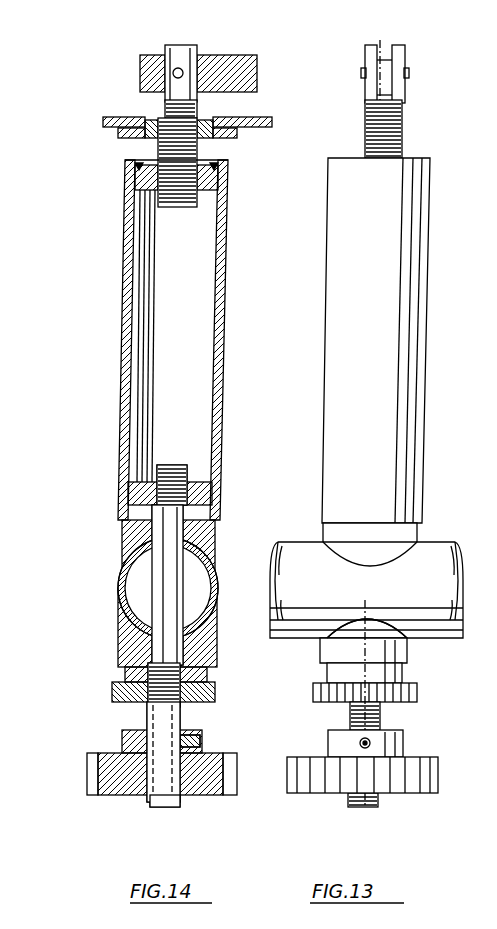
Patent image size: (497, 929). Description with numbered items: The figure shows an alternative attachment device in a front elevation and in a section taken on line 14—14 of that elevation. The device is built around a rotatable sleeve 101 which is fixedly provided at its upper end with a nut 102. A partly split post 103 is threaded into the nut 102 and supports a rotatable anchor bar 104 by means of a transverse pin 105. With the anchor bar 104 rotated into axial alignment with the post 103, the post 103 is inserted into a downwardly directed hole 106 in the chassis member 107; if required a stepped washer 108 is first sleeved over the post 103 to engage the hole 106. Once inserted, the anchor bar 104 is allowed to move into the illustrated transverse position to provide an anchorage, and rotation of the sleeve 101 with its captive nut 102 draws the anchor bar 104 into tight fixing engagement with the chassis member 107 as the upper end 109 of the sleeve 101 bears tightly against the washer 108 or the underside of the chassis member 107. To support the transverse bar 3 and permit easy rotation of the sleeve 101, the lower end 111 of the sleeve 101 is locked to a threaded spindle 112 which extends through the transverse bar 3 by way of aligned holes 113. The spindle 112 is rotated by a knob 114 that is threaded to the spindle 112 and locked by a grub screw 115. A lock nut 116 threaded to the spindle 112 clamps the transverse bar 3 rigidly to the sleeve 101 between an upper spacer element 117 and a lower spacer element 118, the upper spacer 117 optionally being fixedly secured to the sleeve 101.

In FIG. 14, the transverse bar 3 is at (120, 588).
In FIG. 13, the transverse bar 3 is at (366, 590).
In FIG. 13, the section line 14— 14 is at (385, 43).
In FIG. 14, the rotatable sleeve 101 is at (125, 260).
In FIG. 13, the rotatable sleeve 101 is at (408, 280).
In FIG. 14, the nut 102 is at (210, 182).
In FIG. 13, the partly split post 103 is at (398, 128).
In FIG. 14, the anchor bar 104 is at (250, 80).
In FIG. 13, the transverse pin 105 is at (408, 73).
In FIG. 14, the hole 106 is at (207, 118).
In FIG. 14, the chassis member 107 is at (120, 118).
In FIG. 14, the stepped washer 108 is at (223, 138).
In FIG. 14, the upper end of the sleeve 109 is at (142, 163).
In FIG. 14, the lower end of the sleeve 111 is at (133, 483).
In FIG. 14, the threaded spindle 112 is at (158, 727).
In FIG. 13, the threaded spindle 112 is at (380, 722).
In FIG. 14, the aligned holes 113 is at (190, 547).
In FIG. 14, the knob 114 is at (97, 773).
In FIG. 13, the knob 114 is at (430, 770).
In FIG. 13, the grub screw 115 is at (360, 745).
In FIG. 14, the lock nut 116 is at (123, 693).
In FIG. 13, the lock nut 116 is at (322, 693).
In FIG. 14, the upper spacer element 117 is at (123, 540).
In FIG. 13, the upper spacer element 117 is at (382, 538).
In FIG. 14, the lower spacer element 118 is at (123, 640).
In FIG. 13, the lower spacer element 118 is at (397, 650).